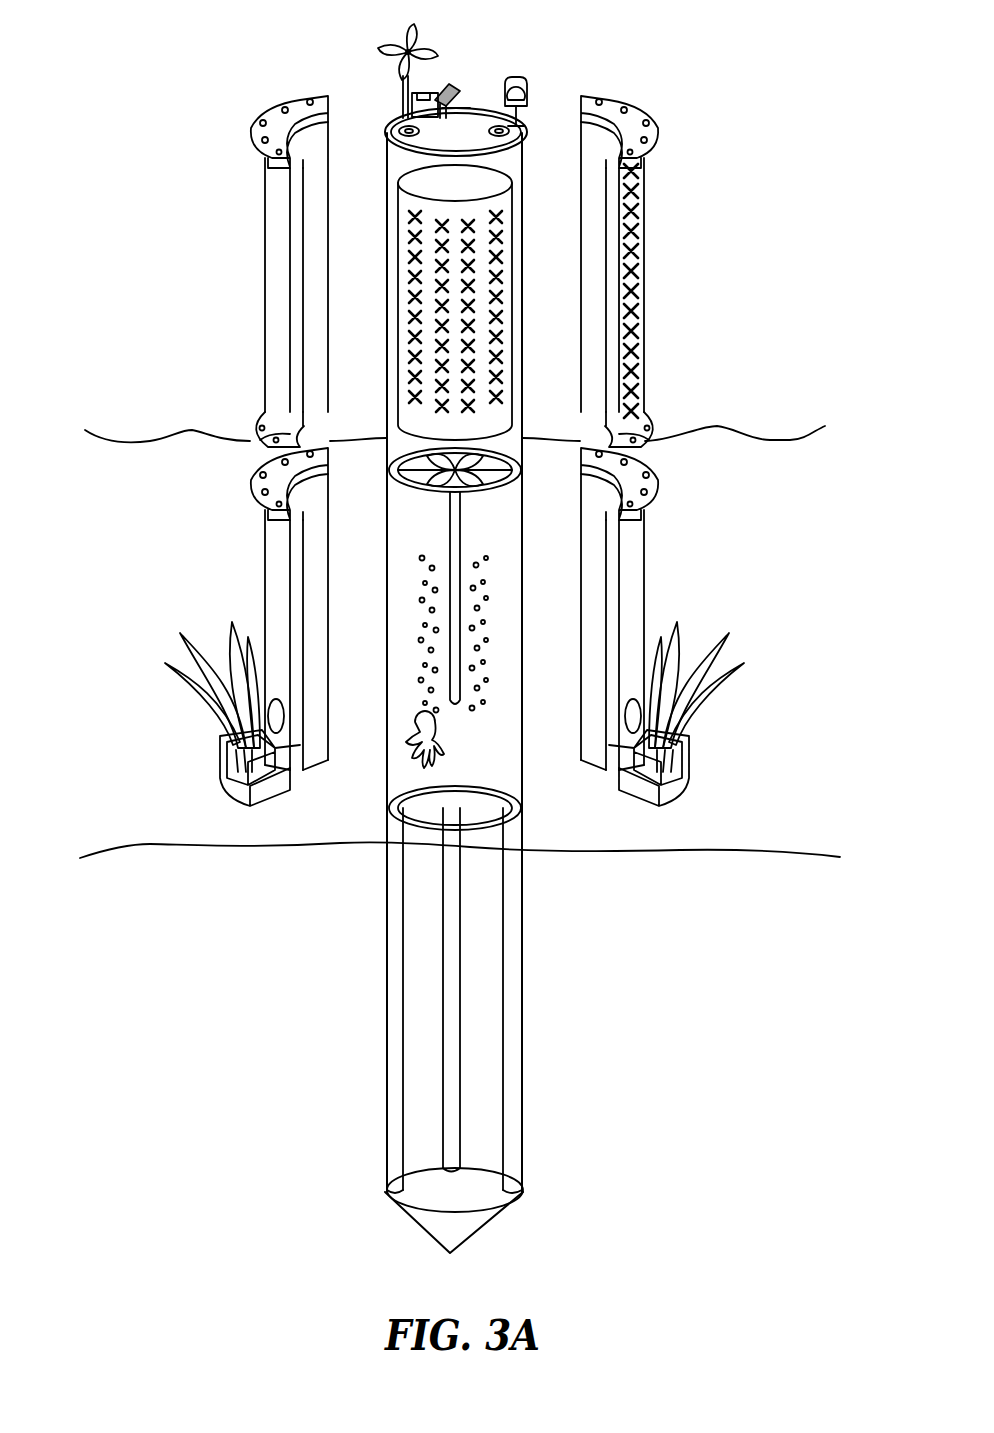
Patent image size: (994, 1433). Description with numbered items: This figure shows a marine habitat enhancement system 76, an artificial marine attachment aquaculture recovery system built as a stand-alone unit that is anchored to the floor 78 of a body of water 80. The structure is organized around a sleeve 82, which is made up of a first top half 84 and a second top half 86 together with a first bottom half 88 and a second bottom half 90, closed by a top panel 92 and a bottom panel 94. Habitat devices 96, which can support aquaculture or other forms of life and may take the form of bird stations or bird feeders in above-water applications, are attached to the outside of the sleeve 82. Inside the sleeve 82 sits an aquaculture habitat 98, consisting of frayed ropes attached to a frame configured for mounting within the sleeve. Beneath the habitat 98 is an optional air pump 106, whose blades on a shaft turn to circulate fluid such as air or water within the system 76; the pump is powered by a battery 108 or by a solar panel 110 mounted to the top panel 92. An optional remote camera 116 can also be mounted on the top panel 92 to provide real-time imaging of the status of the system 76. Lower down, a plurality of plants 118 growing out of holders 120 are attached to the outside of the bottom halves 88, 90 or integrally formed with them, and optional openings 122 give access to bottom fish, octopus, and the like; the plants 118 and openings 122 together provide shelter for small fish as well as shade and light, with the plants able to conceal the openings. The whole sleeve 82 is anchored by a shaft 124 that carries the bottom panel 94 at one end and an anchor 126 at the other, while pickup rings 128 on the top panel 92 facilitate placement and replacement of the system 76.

The marine habitat enhancement system 76 is at (405, 42).
The floor 78 is at (132, 845).
The body of water 80 is at (175, 432).
The sleeve 82 is at (252, 104).
The first top half 84 is at (262, 160).
The second top half 86 is at (645, 160).
The first bottom half 88 is at (262, 520).
The second bottom half 90 is at (645, 520).
The top panel 92 is at (468, 118).
The bottom panel 94 is at (490, 800).
The habitat devices 96 is at (640, 215).
The aquaculture habitat 98 is at (518, 400).
The air pump 106 is at (516, 462).
The battery 108 is at (424, 118).
The solar panel 110 is at (448, 82).
The remote camera 116 is at (428, 90).
The plants 118 is at (205, 628).
The holders 120 is at (272, 792).
The openings 122 is at (262, 640).
The shaft 124 is at (516, 990).
The anchor 126 is at (470, 1222).
The pickup rings 128 is at (400, 133).